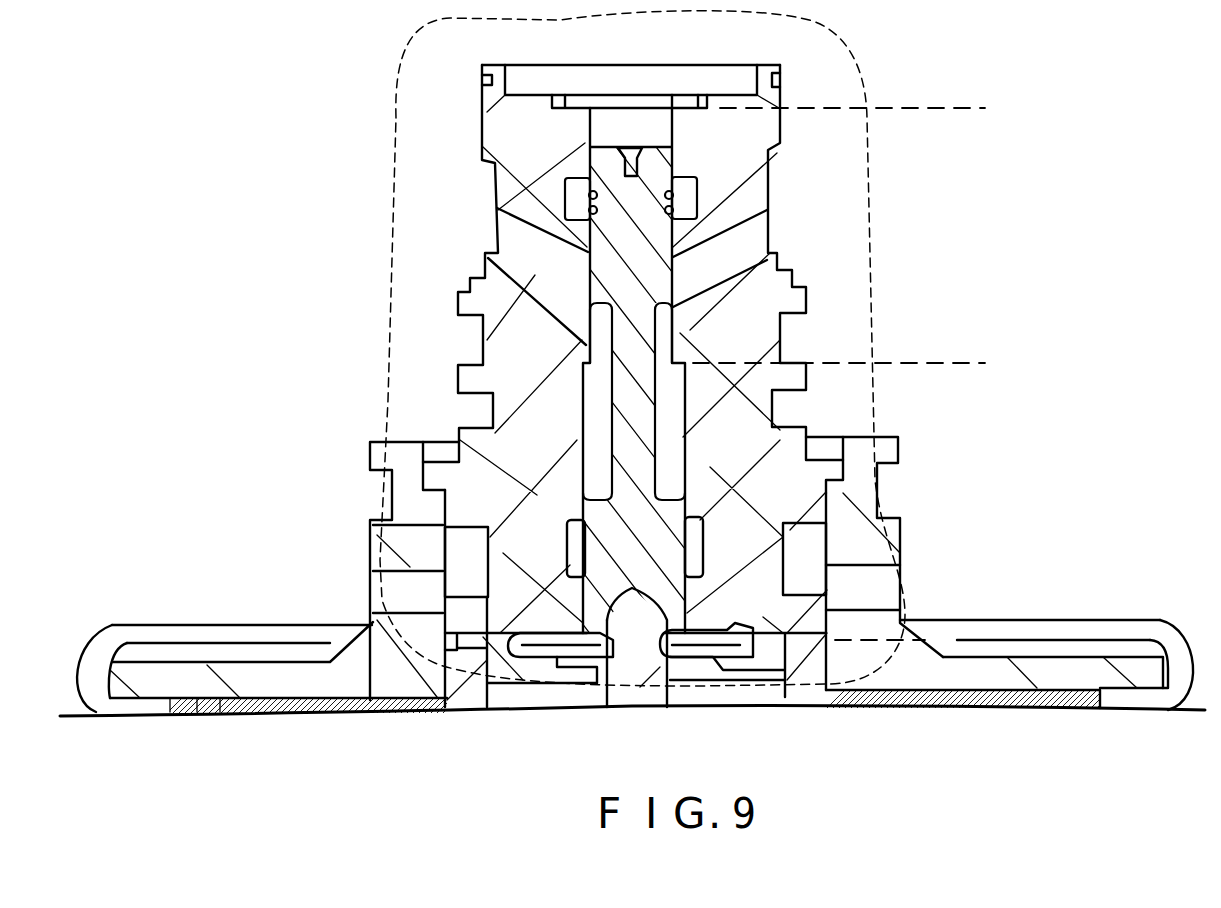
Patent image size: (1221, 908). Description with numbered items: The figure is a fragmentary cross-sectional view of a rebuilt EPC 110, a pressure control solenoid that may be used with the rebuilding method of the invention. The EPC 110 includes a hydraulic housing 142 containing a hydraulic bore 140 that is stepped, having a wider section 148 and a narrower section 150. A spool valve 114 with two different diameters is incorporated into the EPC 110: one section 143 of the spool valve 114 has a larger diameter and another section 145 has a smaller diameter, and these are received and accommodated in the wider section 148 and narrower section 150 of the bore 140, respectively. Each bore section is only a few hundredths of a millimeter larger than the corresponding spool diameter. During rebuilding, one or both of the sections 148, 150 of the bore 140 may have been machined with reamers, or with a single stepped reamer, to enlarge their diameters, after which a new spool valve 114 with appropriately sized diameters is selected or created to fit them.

The rebuilt EPC 110 is at (401, 780).
The spool valve 114 is at (628, 438).
The hydraulic bore 140 is at (590, 270).
The hydraulic housing 142 is at (517, 133).
The section 143 is at (632, 545).
The section 145 is at (588, 250).
The wider section 148 is at (936, 366).
The narrower section 150 is at (928, 107).